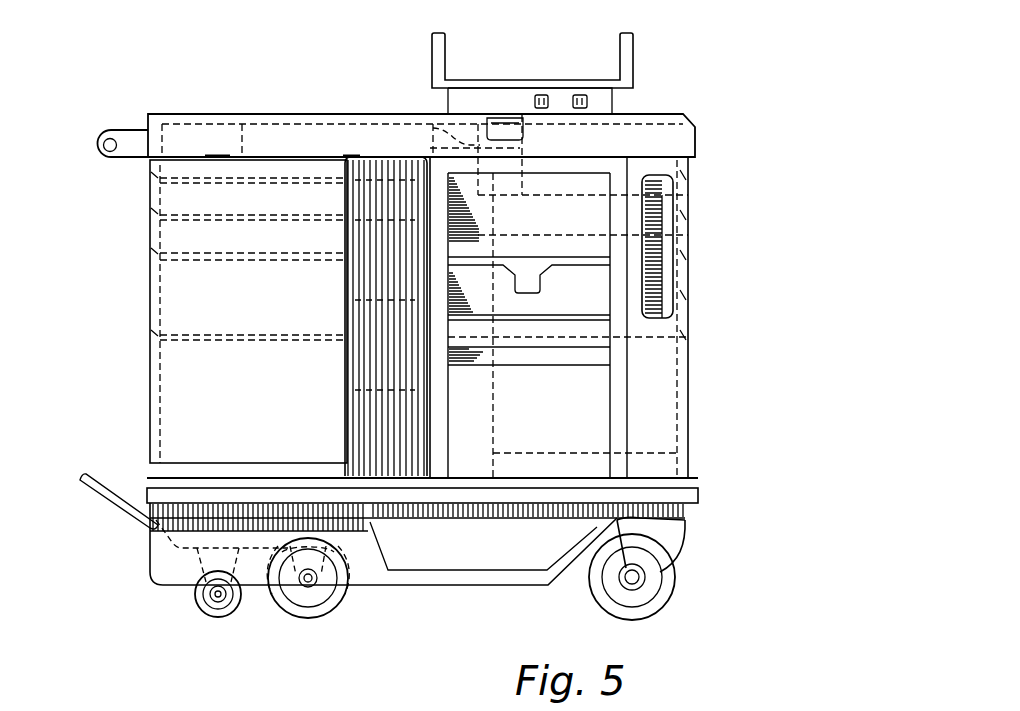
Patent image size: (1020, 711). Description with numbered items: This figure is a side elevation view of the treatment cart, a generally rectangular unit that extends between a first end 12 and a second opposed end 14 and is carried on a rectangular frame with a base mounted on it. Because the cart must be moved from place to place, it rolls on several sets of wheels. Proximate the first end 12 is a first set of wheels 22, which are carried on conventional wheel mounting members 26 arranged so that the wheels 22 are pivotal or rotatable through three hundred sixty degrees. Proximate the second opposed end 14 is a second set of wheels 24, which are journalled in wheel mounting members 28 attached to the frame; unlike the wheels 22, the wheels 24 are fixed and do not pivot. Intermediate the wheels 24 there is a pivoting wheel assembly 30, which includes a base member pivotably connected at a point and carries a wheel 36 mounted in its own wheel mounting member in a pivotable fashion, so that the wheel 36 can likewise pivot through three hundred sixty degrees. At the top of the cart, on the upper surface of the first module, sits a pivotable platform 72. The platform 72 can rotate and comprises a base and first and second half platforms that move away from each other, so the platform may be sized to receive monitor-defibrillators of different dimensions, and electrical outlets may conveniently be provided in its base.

The first end 12 is at (706, 285).
The second opposed end 14 is at (134, 368).
The first set of wheels 22 is at (598, 592).
The second set of wheels 24 is at (320, 614).
The wheel mounting members 26 is at (662, 546).
The wheel mounting members 28 is at (318, 596).
The pivoting wheel assembly 30 is at (176, 600).
The wheel 36 is at (212, 610).
The pivotable platform 72 is at (642, 58).